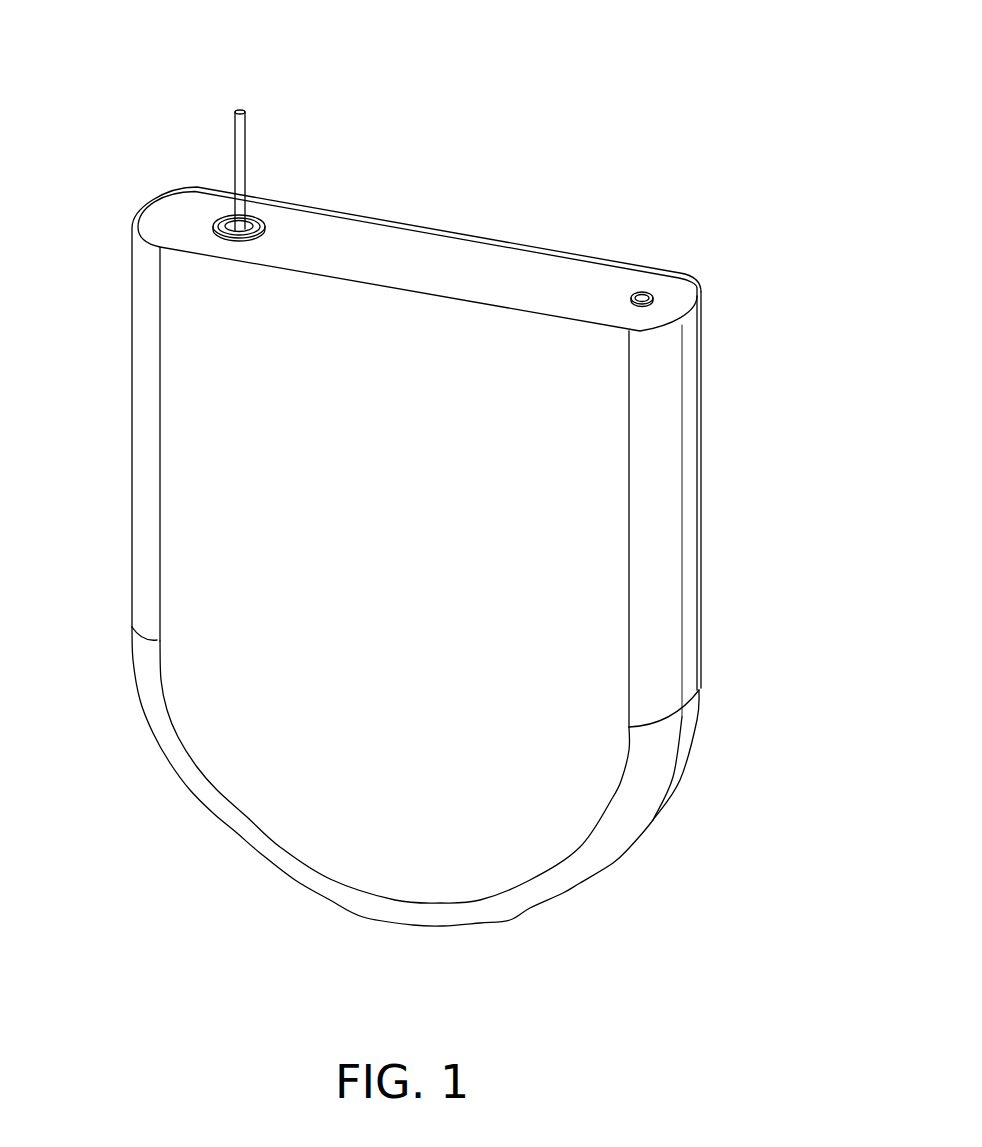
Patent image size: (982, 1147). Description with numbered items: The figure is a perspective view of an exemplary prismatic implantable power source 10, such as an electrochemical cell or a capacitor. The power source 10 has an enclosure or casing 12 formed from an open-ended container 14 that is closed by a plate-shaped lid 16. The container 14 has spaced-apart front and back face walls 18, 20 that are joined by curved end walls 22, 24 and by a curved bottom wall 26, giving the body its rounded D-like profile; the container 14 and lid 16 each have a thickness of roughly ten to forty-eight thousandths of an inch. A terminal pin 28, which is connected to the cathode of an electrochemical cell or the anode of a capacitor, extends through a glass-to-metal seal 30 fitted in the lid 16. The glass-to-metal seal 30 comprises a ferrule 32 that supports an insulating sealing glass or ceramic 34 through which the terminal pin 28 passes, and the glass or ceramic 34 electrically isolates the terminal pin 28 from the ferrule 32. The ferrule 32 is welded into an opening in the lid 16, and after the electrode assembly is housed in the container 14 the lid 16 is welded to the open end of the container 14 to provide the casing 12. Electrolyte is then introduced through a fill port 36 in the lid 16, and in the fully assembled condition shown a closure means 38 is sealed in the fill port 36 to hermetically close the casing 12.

The implantable power source 10 is at (521, 86).
The casing 12 is at (762, 333).
The open-ended container 14 is at (703, 457).
The plate-shaped lid 16 is at (443, 262).
The front face wall 18 is at (252, 763).
The back face wall 20 is at (699, 672).
The curved end wall 22 is at (653, 585).
The curved end wall 24 is at (131, 423).
The curved bottom wall 26 is at (402, 925).
The terminal pin 28 is at (247, 147).
The glass-to-metal seal 30 is at (278, 195).
The ferrule 32 is at (263, 240).
The insulating sealing glass or ceramic 34 is at (225, 210).
The fill port 36 is at (653, 292).
The closure means 38 is at (640, 291).